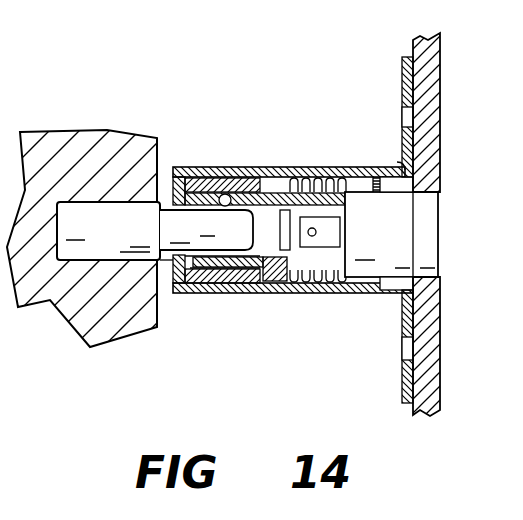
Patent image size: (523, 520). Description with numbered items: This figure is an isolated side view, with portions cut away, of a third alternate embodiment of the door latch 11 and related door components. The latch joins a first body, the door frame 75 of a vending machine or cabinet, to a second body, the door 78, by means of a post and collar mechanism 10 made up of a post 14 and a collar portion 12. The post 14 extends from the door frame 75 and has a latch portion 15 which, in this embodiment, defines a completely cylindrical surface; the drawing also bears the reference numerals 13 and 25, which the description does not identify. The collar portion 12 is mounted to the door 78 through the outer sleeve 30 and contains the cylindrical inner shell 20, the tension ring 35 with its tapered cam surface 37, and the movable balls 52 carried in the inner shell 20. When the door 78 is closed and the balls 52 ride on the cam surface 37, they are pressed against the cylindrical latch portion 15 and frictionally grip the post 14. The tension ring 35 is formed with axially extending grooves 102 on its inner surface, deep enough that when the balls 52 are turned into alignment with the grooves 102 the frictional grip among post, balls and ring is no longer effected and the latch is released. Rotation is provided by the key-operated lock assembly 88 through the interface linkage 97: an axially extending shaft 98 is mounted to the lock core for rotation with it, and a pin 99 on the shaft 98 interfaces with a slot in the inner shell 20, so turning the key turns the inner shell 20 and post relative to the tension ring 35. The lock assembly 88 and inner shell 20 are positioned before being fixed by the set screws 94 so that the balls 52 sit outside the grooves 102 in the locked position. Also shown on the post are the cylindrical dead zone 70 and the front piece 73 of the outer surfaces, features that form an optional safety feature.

The post and collar mechanism 10 is at (176, 140).
The door latch 11 is at (372, 47).
The collar portion 12 is at (293, 162).
The bolt shank 13 is at (88, 254).
The post 14 is at (130, 190).
The latch portion 15 is at (162, 261).
The inner shell 20 is at (206, 230).
The bolt head 25 is at (167, 223).
The outer sleeve 30 is at (303, 170).
The tension ring 35 is at (200, 167).
The cam surface 37 is at (258, 170).
The balls 52 is at (230, 193).
The dead zone 70 is at (260, 285).
The front piece 73 is at (297, 282).
The door frame 75 is at (65, 152).
The door 78 is at (432, 300).
The lock assembly 88 is at (420, 233).
The set screws 94 is at (396, 230).
The interface linkage 97 is at (297, 287).
The shaft 98 is at (330, 173).
The pin 99 is at (316, 190).
The grooves 102 is at (192, 285).